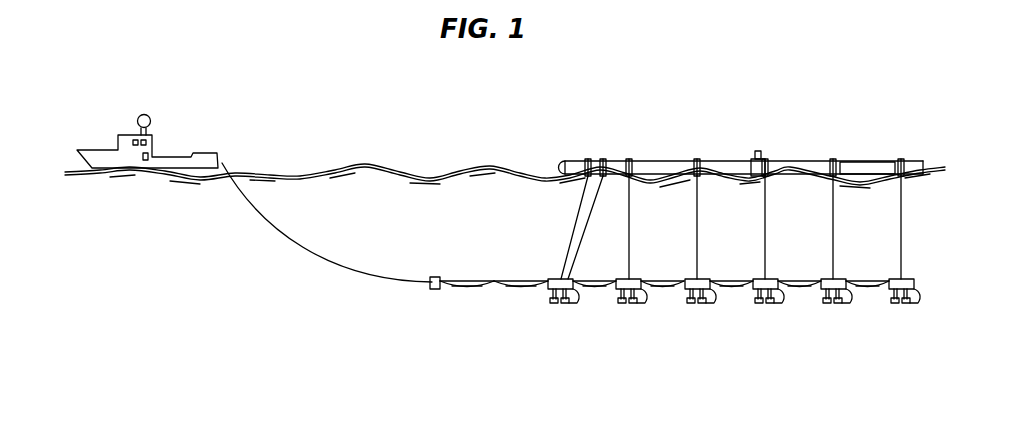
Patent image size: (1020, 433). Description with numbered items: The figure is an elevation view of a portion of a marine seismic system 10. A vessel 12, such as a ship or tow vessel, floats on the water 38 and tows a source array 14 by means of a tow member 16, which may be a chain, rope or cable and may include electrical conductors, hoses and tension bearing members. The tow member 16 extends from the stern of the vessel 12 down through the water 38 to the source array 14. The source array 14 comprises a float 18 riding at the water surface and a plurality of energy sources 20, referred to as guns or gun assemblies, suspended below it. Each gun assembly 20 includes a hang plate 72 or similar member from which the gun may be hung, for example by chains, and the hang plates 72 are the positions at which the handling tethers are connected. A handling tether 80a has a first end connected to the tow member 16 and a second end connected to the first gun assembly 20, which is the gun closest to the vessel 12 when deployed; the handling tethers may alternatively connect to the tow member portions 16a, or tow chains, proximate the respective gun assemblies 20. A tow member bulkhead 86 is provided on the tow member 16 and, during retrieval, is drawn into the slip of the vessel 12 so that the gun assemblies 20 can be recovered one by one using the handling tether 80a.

The marine seismic system 10 is at (280, 89).
The vessel 12 is at (97, 150).
The source array 14 is at (666, 150).
The tow member 16 is at (345, 272).
The tow member portion 16a is at (490, 290).
The float 18 is at (862, 162).
The energy sources 20 is at (757, 305).
The water 38 is at (460, 170).
The hang plate 72 is at (897, 278).
The handling tether 80a is at (515, 278).
The tow member bulkhead 86 is at (433, 290).